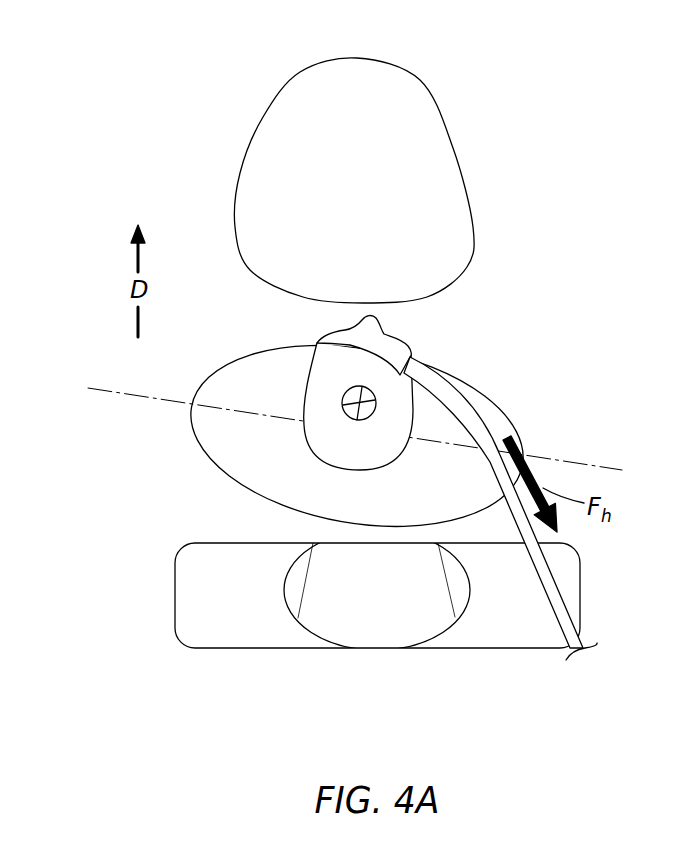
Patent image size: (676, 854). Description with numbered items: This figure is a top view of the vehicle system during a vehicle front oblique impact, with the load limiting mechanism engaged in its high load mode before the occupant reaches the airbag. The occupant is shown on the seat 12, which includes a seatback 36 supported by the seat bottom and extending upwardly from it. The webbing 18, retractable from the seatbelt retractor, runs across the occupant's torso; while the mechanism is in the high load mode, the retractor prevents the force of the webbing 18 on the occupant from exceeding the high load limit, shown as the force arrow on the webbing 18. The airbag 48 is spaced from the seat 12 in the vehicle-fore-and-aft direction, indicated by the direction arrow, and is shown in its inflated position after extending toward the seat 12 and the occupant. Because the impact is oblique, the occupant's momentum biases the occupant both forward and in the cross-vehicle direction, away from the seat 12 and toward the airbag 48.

The airbag 48 is at (455, 148).
The webbing 18 is at (464, 400).
The seat 12 is at (203, 655).
The seatback 36 is at (532, 650).